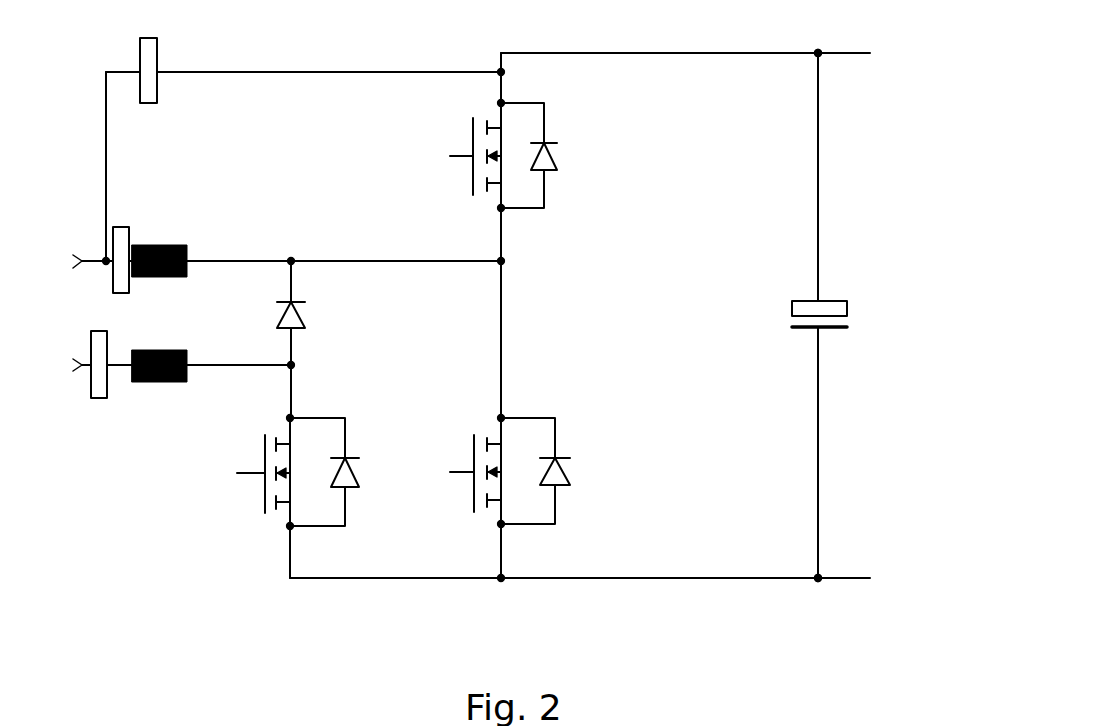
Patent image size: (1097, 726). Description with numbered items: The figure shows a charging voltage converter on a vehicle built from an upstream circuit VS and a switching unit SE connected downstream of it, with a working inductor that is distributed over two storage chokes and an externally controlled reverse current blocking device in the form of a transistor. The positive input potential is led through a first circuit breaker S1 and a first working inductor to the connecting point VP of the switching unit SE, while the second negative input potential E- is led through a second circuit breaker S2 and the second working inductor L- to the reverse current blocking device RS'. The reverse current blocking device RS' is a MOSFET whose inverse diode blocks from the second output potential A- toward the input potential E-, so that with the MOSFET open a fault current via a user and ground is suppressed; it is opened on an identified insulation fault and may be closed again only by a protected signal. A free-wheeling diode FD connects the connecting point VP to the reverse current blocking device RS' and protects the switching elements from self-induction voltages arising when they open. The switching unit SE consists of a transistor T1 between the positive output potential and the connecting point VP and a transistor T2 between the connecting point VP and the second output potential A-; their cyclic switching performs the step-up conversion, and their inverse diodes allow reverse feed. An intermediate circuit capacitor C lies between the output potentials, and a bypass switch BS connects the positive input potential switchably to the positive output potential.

The bypass switch BS is at (152, 103).
The first circuit breaker S1 is at (121, 226).
The second circuit breaker S2 is at (91, 348).
The second working inductor L- is at (211, 355).
The second negative input potential E- is at (86, 369).
The free-wheeling diode FD is at (306, 313).
The reverse current blocking device RS' is at (287, 454).
The transistor (first switching element) T1 is at (503, 140).
The transistor (second switching element) T2 is at (510, 457).
The connecting point VP is at (521, 260).
The intermediate circuit capacitor C is at (820, 301).
The second output potential A- is at (833, 569).
The upstream circuit VS is at (270, 350).
The switching unit SE is at (527, 360).